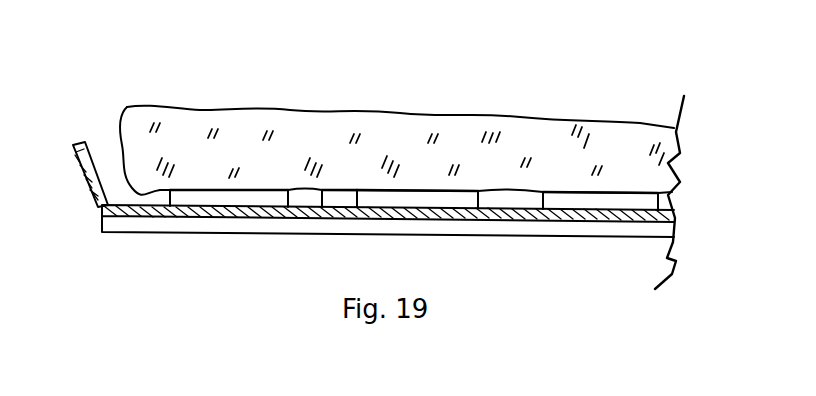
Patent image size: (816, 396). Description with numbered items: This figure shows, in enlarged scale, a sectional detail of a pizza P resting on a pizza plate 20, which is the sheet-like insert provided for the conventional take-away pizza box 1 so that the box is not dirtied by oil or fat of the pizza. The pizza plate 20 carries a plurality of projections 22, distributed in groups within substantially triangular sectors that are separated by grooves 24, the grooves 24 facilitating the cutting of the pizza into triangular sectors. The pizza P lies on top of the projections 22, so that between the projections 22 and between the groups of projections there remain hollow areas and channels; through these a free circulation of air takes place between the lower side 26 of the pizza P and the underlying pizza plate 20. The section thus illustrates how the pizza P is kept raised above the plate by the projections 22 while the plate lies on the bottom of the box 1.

The pizza P is at (255, 123).
The box 1 is at (86, 186).
The pizza plate 20 is at (388, 246).
The projections 22 is at (245, 195).
The grooves 24 is at (548, 227).
The lower side of the pizza 26 is at (325, 193).